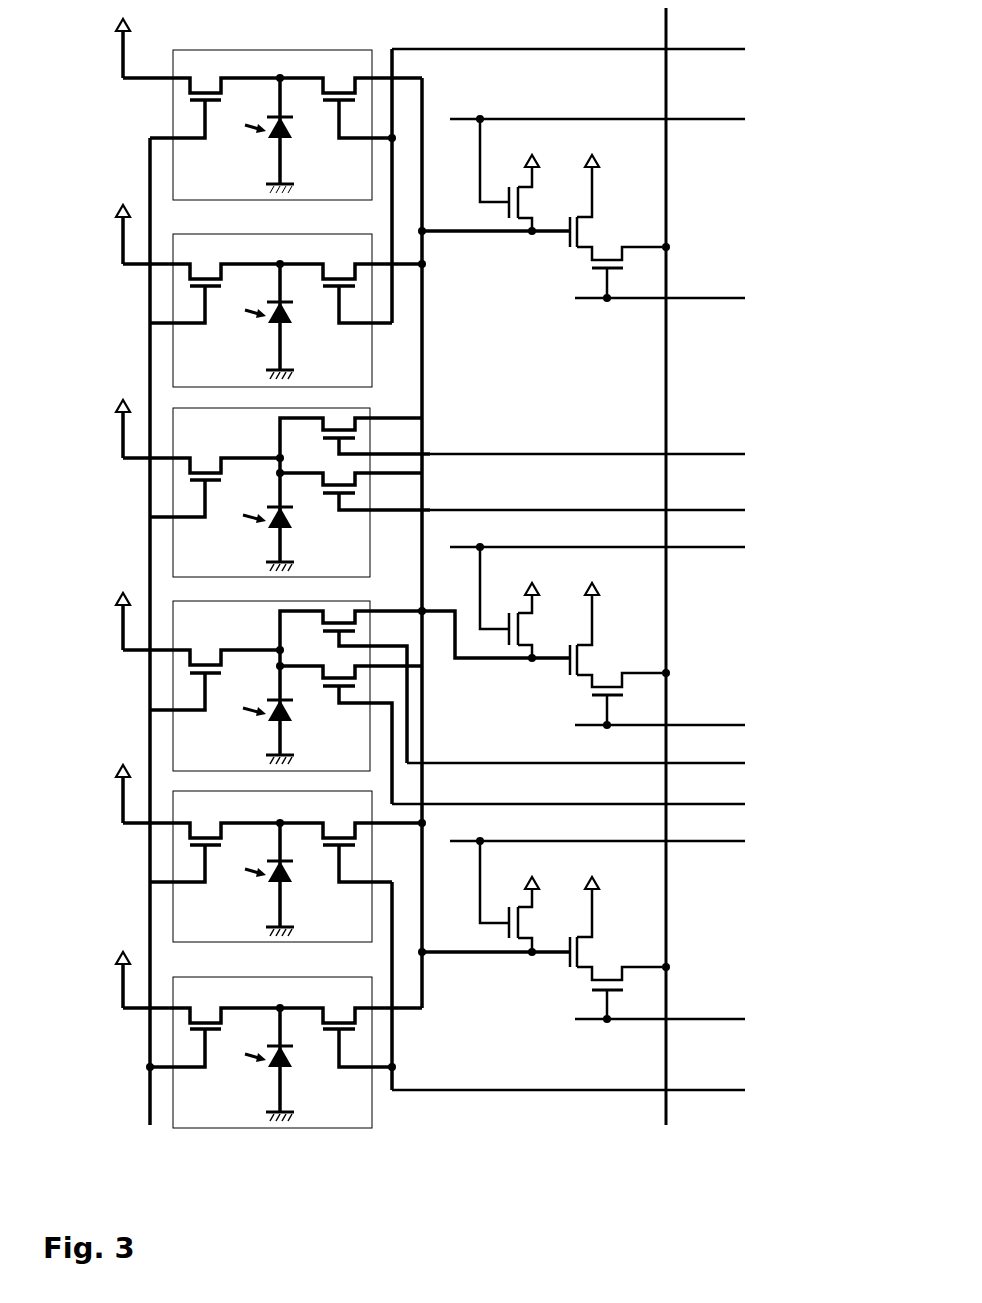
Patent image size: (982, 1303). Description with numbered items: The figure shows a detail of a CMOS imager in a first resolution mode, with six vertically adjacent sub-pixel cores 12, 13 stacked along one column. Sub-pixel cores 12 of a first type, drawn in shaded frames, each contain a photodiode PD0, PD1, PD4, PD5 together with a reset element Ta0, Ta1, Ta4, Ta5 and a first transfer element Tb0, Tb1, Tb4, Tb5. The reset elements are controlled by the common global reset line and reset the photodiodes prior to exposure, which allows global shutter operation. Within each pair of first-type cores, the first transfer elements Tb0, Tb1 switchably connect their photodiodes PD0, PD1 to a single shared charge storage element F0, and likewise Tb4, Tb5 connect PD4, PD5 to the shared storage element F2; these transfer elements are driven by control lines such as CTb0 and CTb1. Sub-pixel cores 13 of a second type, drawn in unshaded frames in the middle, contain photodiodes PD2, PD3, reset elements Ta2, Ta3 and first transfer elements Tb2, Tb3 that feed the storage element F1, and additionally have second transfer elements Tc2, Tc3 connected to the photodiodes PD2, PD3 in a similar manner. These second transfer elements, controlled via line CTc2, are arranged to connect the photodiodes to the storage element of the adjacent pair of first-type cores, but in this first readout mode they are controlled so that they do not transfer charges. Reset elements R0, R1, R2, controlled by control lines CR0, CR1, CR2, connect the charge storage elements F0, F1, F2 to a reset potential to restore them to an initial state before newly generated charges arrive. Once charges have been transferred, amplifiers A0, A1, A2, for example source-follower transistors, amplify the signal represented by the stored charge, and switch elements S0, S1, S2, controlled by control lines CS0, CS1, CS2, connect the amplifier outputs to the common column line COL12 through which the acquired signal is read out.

The sub-pixel core of a first type 12 is at (168, 126).
The sub-pixel core of a second type 13 is at (168, 477).
The reset element Ta0 is at (203, 82).
The first transfer element Tb0 is at (337, 82).
The photodiode PD0 is at (273, 140).
The reset element Ta1 is at (205, 273).
The first transfer element Tb1 is at (337, 268).
The photodiode PD1 is at (270, 326).
The reset element Ta2 is at (200, 464).
The first transfer element Tb2 is at (328, 500).
The second transfer element Tc2 is at (340, 425).
The photodiode PD2 is at (245, 521).
The reset element Ta3 is at (205, 655).
The first transfer element Tb3 is at (338, 620).
The second transfer element Tc3 is at (328, 693).
The photodiode PD3 is at (250, 716).
The reset element Ta4 is at (195, 850).
The first transfer element Tb4 is at (350, 852).
The photodiode PD4 is at (265, 878).
The reset element Ta5 is at (205, 1018).
The first transfer element Tb5 is at (337, 1018).
The photodiode PD5 is at (268, 1078).
The reset element R0 is at (510, 176).
The amplifier A0 is at (583, 233).
The charge storage element F0 is at (538, 240).
The switch element S0 is at (596, 270).
The reset element R1 is at (525, 628).
The amplifier A1 is at (587, 657).
The charge storage element F1 is at (518, 667).
The switch element S1 is at (597, 702).
The reset element R2 is at (503, 910).
The amplifier A2 is at (587, 950).
The charge storage element F2 is at (532, 963).
The switch element S2 is at (595, 992).
The control line CTb0 is at (602, 570).
The control line CTb1 is at (609, 637).
The control line CTc2 is at (599, 630).
The control line CR0 is at (624, 120).
The control line CR1 is at (624, 548).
The control line CR2 is at (624, 842).
The control line CS0 is at (686, 299).
The control line CS1 is at (686, 726).
The control line CS2 is at (686, 1020).
The column line COL12 is at (668, 589).